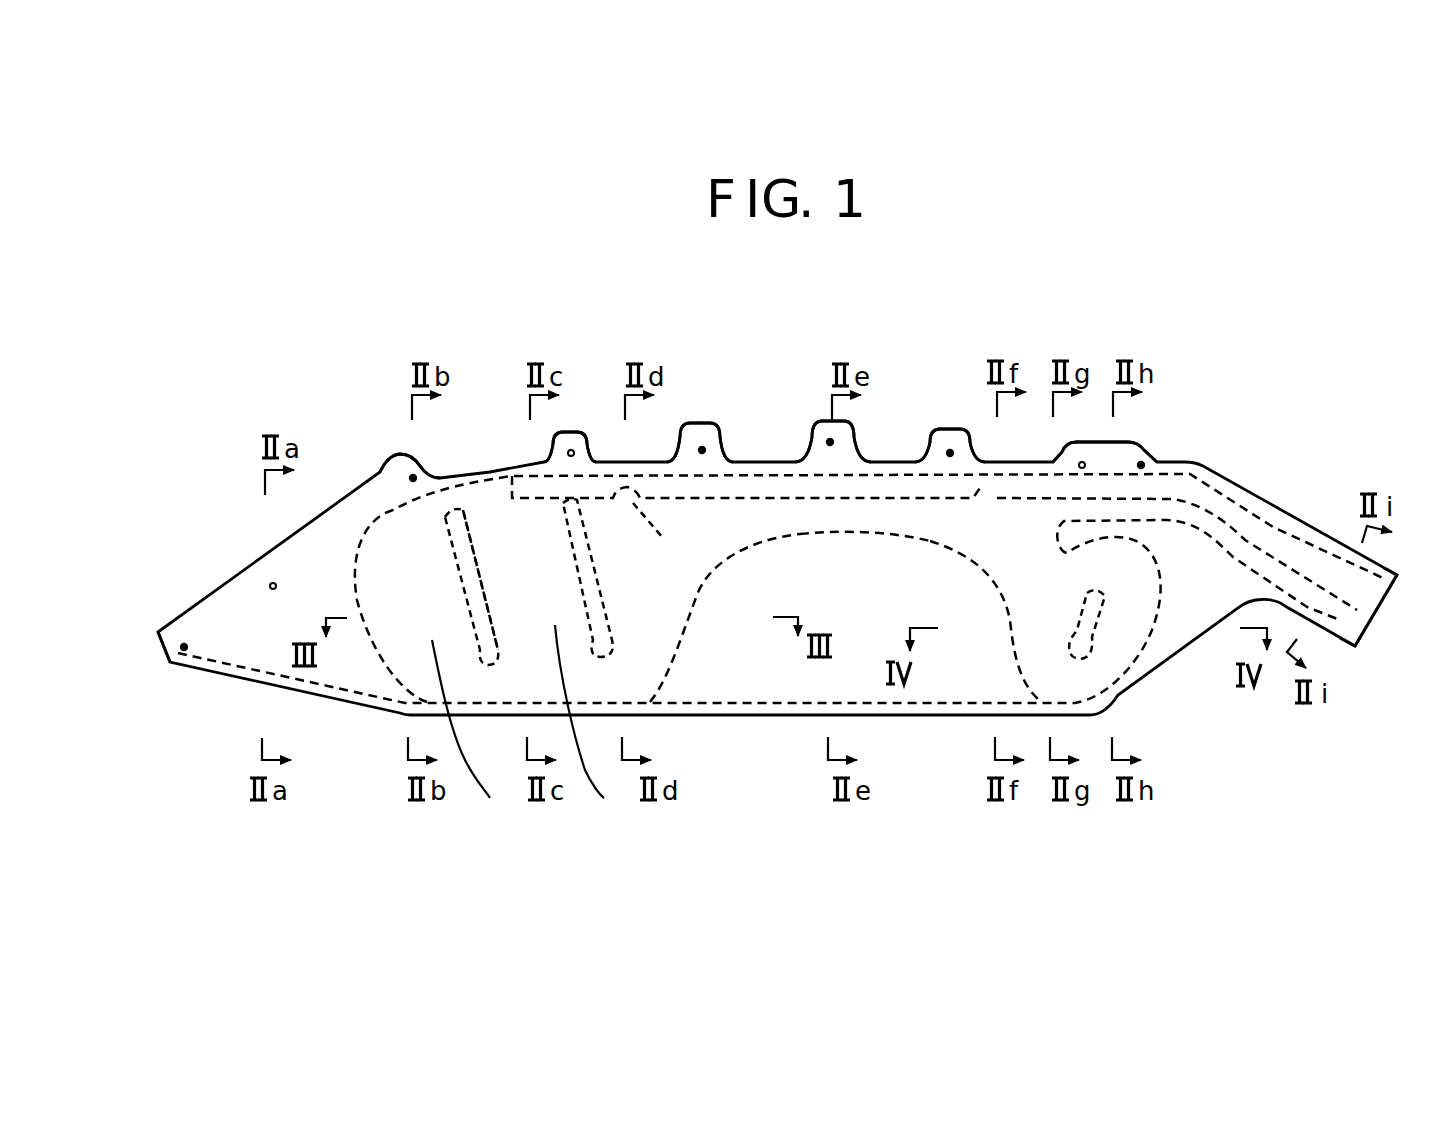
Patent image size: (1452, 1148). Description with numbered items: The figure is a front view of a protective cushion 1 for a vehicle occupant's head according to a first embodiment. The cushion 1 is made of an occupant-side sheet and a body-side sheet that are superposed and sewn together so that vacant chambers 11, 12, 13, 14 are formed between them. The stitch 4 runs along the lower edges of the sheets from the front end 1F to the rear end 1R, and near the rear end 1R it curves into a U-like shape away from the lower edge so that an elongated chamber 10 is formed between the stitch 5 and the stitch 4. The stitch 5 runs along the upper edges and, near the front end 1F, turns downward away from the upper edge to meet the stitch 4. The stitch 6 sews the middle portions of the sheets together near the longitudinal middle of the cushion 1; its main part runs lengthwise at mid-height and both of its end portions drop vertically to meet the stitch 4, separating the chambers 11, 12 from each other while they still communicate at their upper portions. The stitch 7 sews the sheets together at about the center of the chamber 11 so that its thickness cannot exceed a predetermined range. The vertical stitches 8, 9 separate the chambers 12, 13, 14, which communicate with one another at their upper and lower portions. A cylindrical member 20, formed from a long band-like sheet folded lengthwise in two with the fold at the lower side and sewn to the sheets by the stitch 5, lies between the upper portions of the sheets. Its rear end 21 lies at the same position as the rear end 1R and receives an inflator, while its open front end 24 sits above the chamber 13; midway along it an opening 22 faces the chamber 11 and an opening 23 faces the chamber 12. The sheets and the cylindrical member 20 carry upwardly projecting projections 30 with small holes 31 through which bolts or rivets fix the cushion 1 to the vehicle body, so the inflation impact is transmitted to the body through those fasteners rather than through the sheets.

The cushion 1 is at (1132, 308).
The front end 1F is at (163, 662).
The rear end 1R is at (1355, 646).
The stitch 4 is at (213, 662).
The stitch 5 is at (353, 600).
The stitch 6 is at (858, 534).
The stitch 7 is at (1082, 610).
The stitch 8 is at (580, 543).
The stitch 9 is at (452, 543).
The elongated chamber 10 is at (1345, 617).
The chamber 11 is at (1015, 637).
The chamber 12 is at (672, 597).
The chamber 13 is at (590, 730).
The chamber 14 is at (470, 739).
The cylindrical member 20 is at (758, 506).
The rear end 21 is at (1393, 587).
The opening 22 is at (985, 490).
The opening 23 is at (657, 540).
The open front end 24 is at (497, 580).
The projections 30 is at (404, 454).
The small holes 31 is at (184, 647).